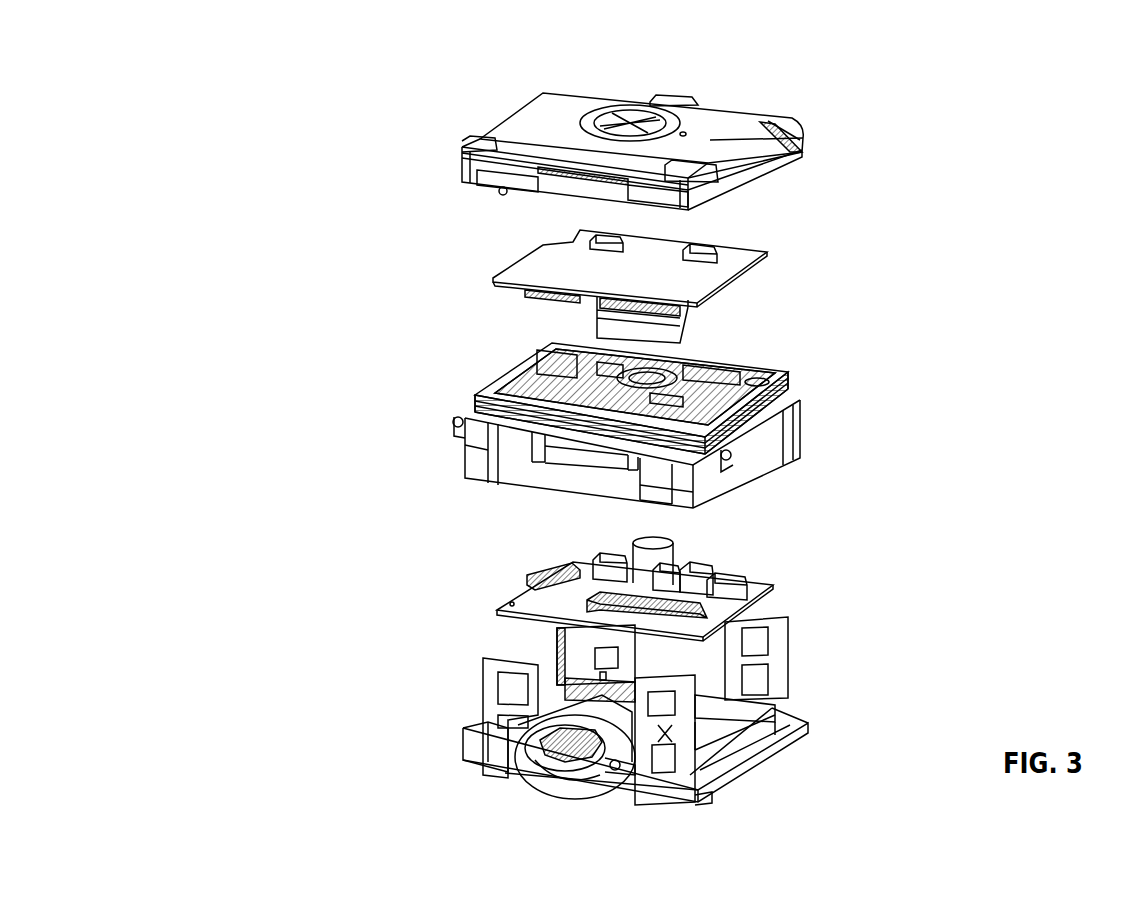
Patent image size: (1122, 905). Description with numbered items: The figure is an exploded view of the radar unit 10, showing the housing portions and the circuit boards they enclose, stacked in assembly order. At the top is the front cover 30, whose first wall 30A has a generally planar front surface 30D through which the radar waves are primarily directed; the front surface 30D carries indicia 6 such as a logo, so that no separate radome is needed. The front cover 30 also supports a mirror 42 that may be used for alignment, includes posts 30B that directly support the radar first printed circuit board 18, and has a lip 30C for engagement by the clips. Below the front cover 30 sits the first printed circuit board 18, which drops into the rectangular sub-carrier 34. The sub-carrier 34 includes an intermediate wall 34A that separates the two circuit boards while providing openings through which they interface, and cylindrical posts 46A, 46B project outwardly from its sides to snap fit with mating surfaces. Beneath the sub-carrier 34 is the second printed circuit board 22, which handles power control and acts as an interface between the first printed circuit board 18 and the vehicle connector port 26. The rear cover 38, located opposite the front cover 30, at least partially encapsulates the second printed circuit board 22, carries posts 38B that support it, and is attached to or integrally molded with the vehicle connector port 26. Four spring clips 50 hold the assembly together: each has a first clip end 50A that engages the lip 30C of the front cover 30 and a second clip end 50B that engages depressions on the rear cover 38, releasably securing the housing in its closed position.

The radar unit 10 is at (300, 276).
The front cover 30 is at (522, 119).
The first wall 30A is at (560, 103).
The posts 30B is at (497, 194).
The lip 30C is at (475, 146).
The front surface 30D is at (708, 152).
The mirror 42 is at (692, 97).
The indicia 6 is at (685, 133).
The first printed circuit board 18 is at (680, 280).
The sub-carrier 34 is at (790, 401).
The intermediate wall 34A is at (553, 387).
The cylindrical post 46A is at (453, 425).
The cylindrical post 46B is at (735, 462).
The second printed circuit board 22 is at (775, 587).
The rear cover 38 is at (780, 727).
The posts 38B is at (787, 697).
The spring clips 50 is at (630, 673).
The first clip end 50A is at (490, 653).
The second clip end 50B is at (487, 772).
The vehicle connector port 26 is at (567, 800).